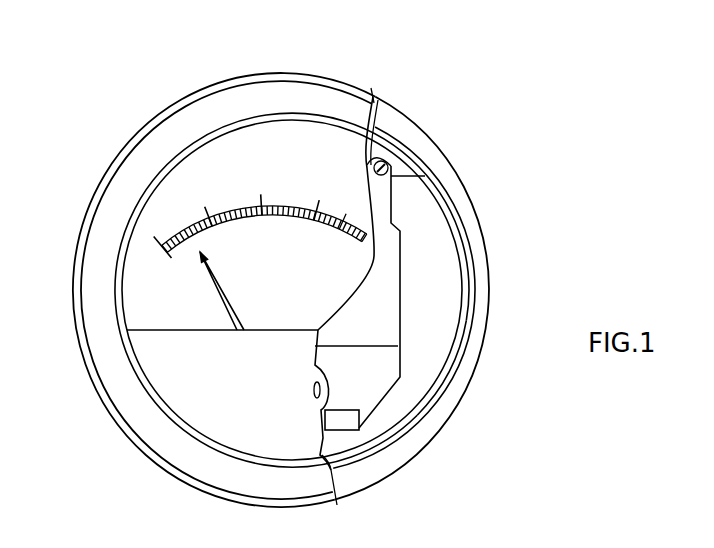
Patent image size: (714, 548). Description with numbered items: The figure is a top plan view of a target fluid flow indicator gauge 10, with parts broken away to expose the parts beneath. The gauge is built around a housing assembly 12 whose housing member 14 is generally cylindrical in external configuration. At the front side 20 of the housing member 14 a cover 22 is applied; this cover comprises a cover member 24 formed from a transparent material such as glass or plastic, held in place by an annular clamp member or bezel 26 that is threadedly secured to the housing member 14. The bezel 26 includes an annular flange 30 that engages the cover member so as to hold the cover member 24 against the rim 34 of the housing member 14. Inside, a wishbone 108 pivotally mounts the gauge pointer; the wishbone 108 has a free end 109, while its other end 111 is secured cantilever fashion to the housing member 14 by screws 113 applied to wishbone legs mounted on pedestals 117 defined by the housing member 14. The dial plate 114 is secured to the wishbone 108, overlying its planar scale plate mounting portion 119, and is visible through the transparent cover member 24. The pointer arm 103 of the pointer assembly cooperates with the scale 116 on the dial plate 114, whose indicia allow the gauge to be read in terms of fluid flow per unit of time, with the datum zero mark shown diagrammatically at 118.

The target fluid flow indicator gauge 10 is at (495, 142).
The housing assembly 12 is at (126, 112).
The housing member 14 is at (468, 178).
The front side 20 is at (492, 284).
The cover 22 is at (140, 465).
The cover member 24 is at (185, 381).
The bezel 26 is at (344, 88).
The annular flange 30 is at (298, 105).
The rim 34 is at (482, 318).
The pointer arm 103 is at (224, 290).
The wishbone 108 is at (380, 294).
The free end 109 is at (373, 388).
The other end 111 is at (384, 250).
The screws 113 is at (388, 162).
The dial plate 114 is at (138, 268).
The scale 116 is at (248, 155).
The pedestals 117 is at (384, 158).
The datum zero mark 118 is at (160, 265).
The planar scale plate mounting portion 119 is at (463, 343).